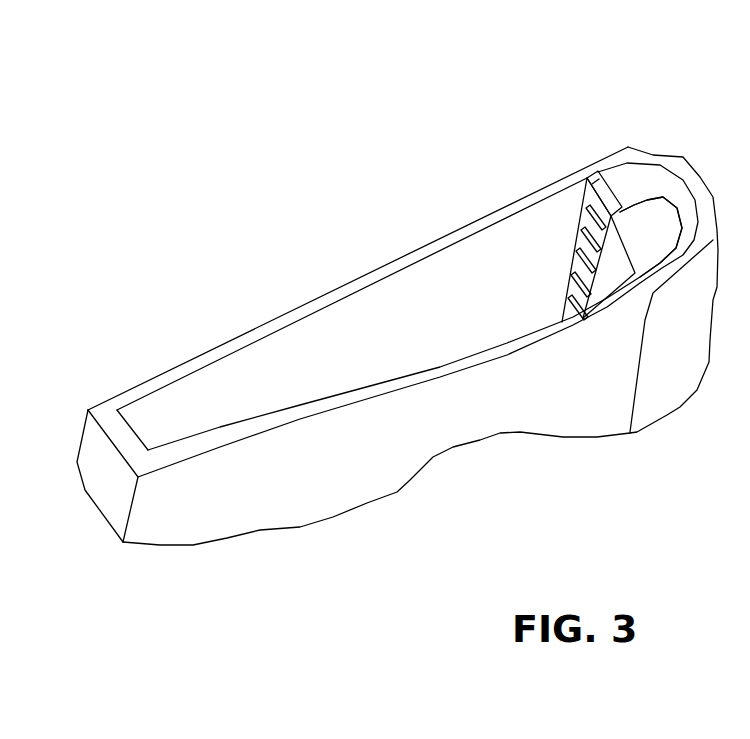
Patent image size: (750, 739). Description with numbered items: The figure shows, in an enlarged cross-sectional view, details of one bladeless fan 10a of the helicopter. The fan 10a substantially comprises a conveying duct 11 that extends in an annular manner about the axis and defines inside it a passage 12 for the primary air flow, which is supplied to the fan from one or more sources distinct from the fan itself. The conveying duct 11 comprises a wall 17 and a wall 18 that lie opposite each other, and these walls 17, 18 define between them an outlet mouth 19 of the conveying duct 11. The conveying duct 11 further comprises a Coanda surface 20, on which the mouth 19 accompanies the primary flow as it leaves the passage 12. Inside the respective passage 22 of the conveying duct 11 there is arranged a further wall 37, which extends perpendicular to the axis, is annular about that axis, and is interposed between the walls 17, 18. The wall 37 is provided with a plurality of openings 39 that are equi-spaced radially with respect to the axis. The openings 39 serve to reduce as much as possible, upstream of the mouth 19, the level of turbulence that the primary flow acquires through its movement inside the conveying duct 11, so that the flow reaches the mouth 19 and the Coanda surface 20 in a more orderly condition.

The fan 10a is at (358, 260).
The conveying duct 11 is at (100, 503).
The passage 12 is at (236, 357).
The wall 17 is at (307, 304).
The wall 18 is at (383, 381).
The outlet mouth 19 is at (669, 259).
The Coanda surface 20 is at (578, 331).
The passage 22 is at (452, 293).
The wall 37 is at (622, 198).
The openings 39 is at (575, 224).